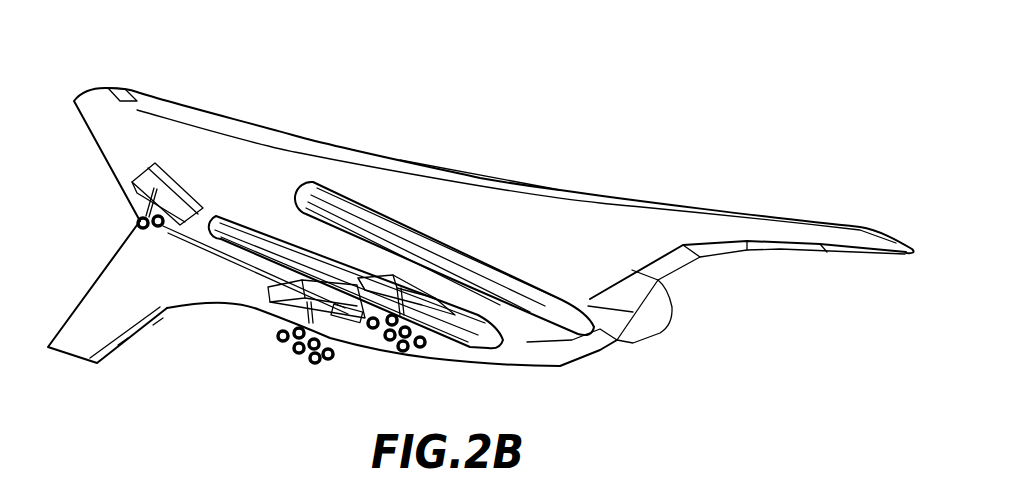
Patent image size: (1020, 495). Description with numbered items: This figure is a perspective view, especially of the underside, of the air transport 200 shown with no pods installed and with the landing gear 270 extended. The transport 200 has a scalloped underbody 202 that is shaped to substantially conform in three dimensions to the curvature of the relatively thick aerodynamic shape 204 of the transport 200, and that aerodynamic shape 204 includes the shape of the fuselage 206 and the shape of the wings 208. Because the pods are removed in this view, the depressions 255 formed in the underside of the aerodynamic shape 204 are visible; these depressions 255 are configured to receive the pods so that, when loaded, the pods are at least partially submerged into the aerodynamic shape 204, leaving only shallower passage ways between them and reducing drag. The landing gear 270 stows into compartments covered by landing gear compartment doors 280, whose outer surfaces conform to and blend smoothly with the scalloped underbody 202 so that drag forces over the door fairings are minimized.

The air transport 200 is at (494, 227).
The scalloped underbody 202 is at (589, 241).
The relatively thick aerodynamic shape 204 is at (476, 178).
The fuselage 206 is at (123, 88).
The wings 208 is at (91, 287).
The depressions 255 is at (365, 198).
The landing gear 270 is at (137, 223).
The landing gear compartment doors 280 is at (188, 197).